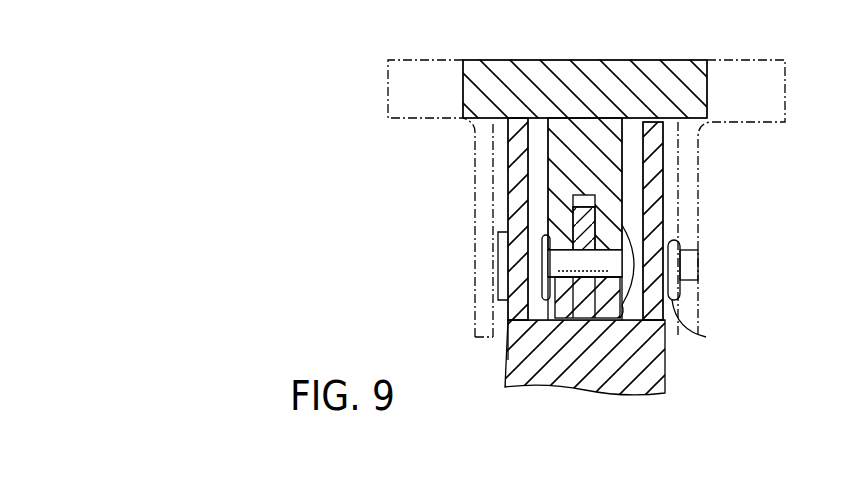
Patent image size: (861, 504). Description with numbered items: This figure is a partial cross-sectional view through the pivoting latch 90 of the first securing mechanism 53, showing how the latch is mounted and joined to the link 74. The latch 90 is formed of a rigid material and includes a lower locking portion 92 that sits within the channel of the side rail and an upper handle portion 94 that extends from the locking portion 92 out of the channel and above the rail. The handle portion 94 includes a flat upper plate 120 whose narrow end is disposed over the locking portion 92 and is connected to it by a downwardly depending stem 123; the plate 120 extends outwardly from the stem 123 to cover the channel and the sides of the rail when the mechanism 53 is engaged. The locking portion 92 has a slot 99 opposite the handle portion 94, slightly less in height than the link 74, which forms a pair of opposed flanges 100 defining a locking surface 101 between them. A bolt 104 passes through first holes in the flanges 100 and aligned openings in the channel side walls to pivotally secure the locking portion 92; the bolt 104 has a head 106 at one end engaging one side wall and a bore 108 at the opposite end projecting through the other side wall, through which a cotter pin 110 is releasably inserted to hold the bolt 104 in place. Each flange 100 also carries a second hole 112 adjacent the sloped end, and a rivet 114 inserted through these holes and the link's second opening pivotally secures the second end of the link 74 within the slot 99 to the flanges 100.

The first securing mechanism 53 is at (376, 162).
The link 74 is at (583, 330).
The latch 90 is at (748, 42).
The lower locking portion 92 is at (506, 309).
The upper handle portion 94 is at (714, 156).
The slot 99 is at (575, 205).
The flanges 100 is at (622, 233).
The locking surface 101 is at (598, 197).
The bolt 104 is at (496, 288).
The head 106 is at (500, 261).
The bore 108 is at (698, 264).
The cotter pin 110 is at (690, 330).
The second hole 112 is at (516, 352).
The rivet 114 is at (620, 318).
The flat upper plate 120 is at (632, 59).
The stem 123 is at (570, 146).